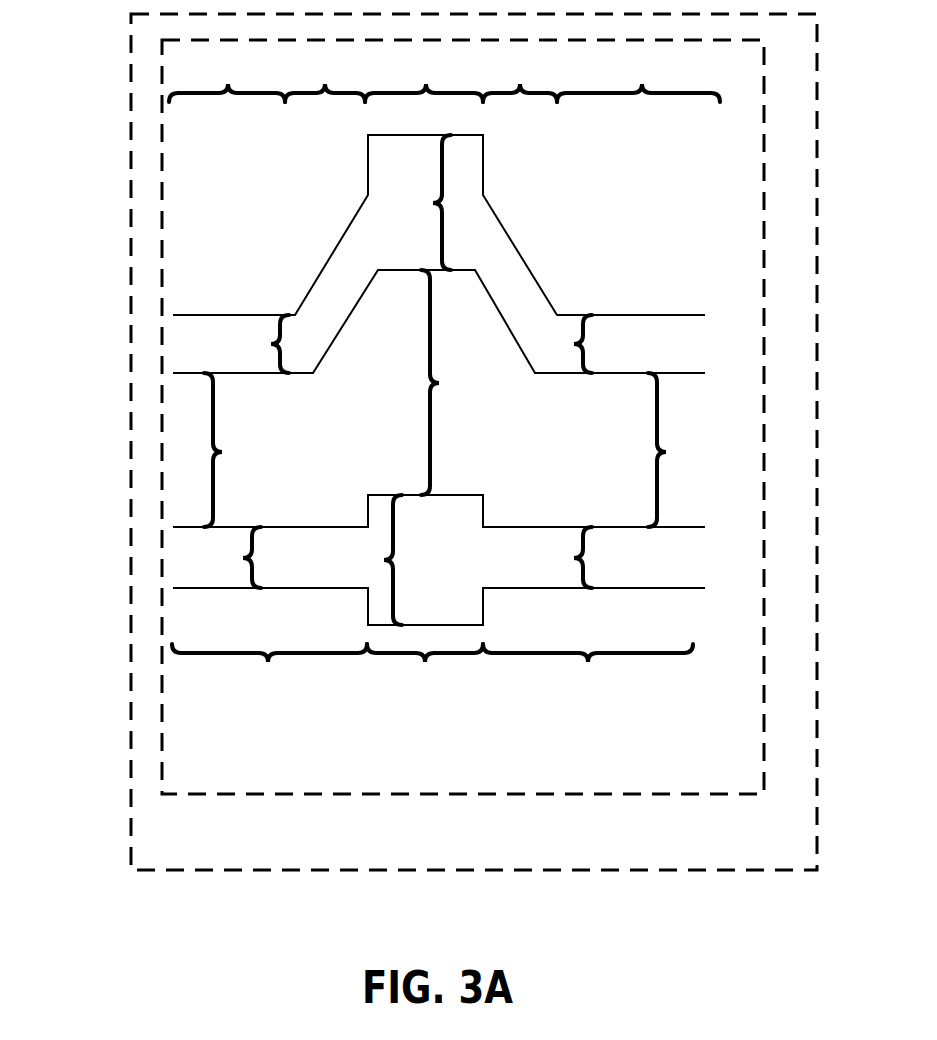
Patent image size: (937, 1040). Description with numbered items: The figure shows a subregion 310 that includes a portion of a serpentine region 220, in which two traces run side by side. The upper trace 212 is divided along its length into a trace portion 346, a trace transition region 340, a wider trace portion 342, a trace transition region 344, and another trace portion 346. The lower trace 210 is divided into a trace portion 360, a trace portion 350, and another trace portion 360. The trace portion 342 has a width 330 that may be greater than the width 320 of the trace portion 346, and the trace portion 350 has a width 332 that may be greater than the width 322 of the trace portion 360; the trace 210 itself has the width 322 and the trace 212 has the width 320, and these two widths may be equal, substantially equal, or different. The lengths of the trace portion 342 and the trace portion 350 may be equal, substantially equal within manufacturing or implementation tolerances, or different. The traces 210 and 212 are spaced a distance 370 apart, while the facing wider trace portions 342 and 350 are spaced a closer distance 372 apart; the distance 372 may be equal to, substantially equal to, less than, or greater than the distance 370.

The trace 210 is at (625, 588).
The trace 212 is at (630, 315).
The serpentine region 220 is at (252, 859).
The subregion 310 is at (311, 786).
The width 320 is at (412, 344).
The width 322 is at (398, 557).
The width 330 is at (421, 202).
The width 332 is at (373, 560).
The trace transition region 340 is at (325, 79).
The trace portion 342 is at (424, 79).
The trace transition region 344 is at (520, 79).
The trace portion 346 is at (444, 79).
The trace portion 350 is at (425, 670).
The trace portion 360 is at (432, 670).
The distance 370 is at (452, 450).
The distance 372 is at (447, 382).